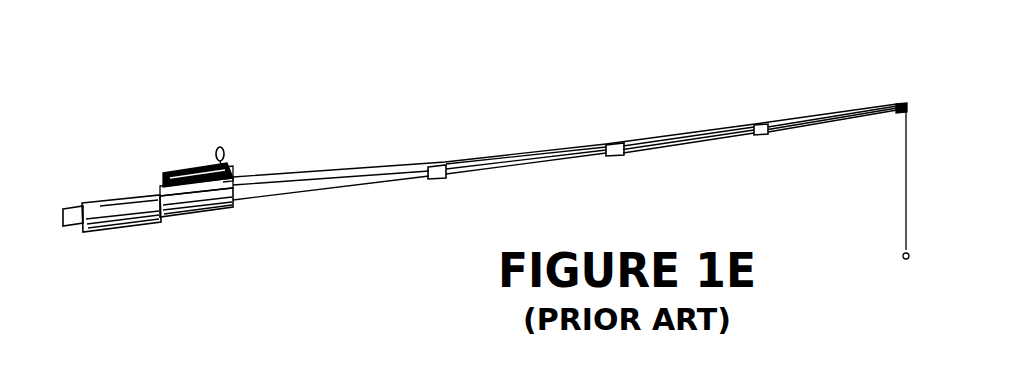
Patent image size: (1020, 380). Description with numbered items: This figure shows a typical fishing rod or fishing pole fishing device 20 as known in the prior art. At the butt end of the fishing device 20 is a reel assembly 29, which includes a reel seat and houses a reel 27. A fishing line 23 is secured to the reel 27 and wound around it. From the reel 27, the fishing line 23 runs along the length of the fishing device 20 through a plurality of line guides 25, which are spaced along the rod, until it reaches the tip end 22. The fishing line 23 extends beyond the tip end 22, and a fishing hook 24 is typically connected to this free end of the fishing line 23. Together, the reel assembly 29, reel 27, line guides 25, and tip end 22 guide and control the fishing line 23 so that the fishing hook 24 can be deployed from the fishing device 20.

The fishing device 20 is at (388, 236).
The tip end 22 is at (893, 96).
The fishing line 23 is at (337, 170).
The fishing hook 24 is at (905, 259).
The line guides 25 is at (436, 165).
The reel 27 is at (172, 177).
The reel assembly 29 is at (188, 146).